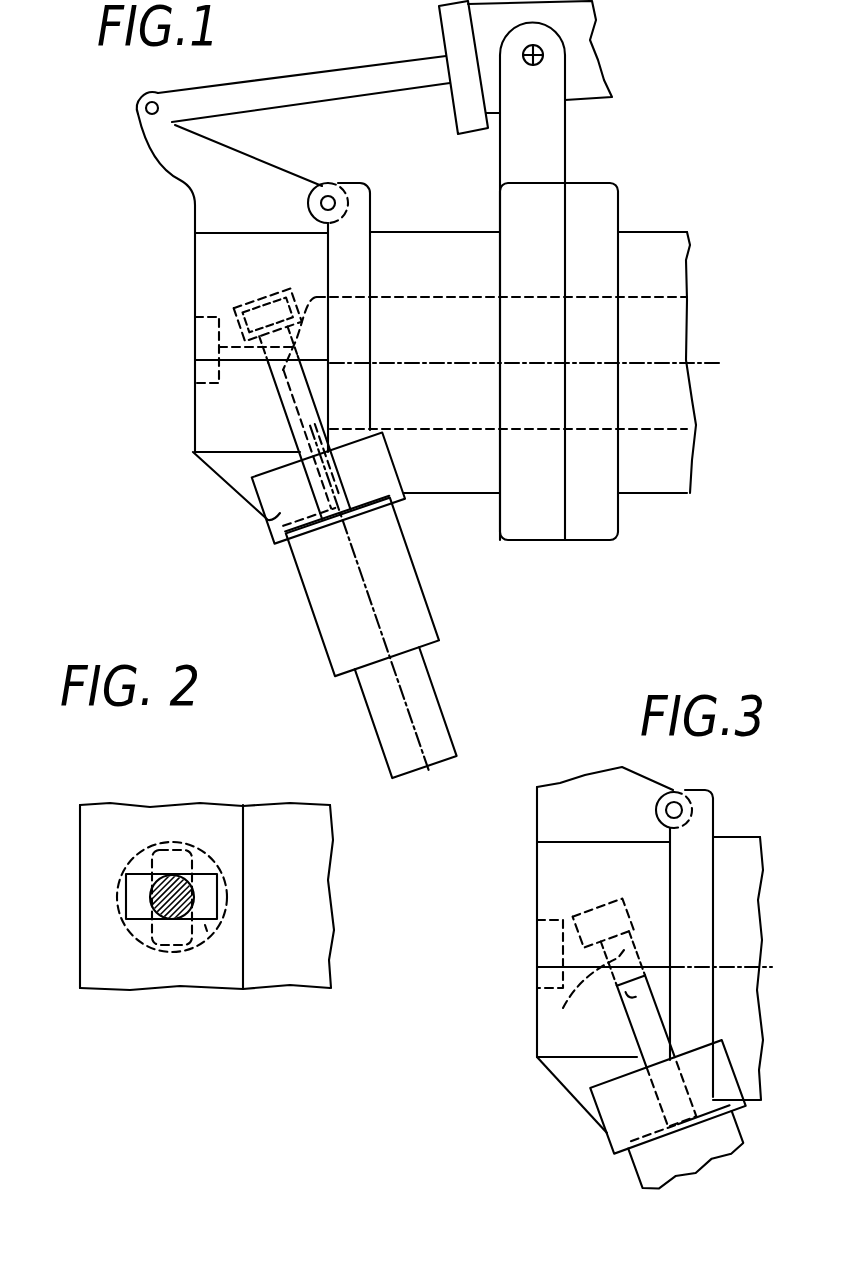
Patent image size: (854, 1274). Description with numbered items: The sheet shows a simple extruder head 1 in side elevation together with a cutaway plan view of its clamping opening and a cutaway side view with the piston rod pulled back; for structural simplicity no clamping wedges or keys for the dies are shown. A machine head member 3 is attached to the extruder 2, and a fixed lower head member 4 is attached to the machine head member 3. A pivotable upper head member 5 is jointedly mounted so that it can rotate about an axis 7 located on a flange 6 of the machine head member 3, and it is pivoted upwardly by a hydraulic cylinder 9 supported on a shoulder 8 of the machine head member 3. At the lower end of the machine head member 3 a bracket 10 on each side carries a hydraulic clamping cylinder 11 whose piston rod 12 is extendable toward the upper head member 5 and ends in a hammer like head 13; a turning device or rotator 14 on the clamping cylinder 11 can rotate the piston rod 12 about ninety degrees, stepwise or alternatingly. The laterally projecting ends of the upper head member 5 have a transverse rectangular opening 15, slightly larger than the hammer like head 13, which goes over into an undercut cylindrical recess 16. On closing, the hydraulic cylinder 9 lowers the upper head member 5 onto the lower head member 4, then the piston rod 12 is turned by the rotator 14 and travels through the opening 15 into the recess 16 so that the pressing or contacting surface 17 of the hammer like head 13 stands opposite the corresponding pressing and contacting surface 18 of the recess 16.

In FIG. 1, the extruder head 1 is at (150, 454).
In FIG. 1, the extruder 2 is at (658, 478).
In FIG. 3, the extruder 2 is at (721, 968).
In FIG. 1, the machine head member 3 is at (443, 252).
In FIG. 1, the fixed lower head member 4 is at (210, 413).
In FIG. 2, the fixed lower head member 4 is at (294, 978).
In FIG. 1, the pivotable upper head member 5 is at (210, 265).
In FIG. 2, the pivotable upper head member 5 is at (116, 815).
In FIG. 3, the pivotable upper head member 5 is at (548, 888).
In FIG. 1, the flange 6 is at (353, 230).
In FIG. 3, the flange 6 is at (691, 943).
In FIG. 1, the axis 7 is at (326, 200).
In FIG. 3, the axis 7 is at (690, 812).
In FIG. 1, the shoulder 8 is at (550, 163).
In FIG. 1, the hydraulic cylinder 9 is at (593, 88).
In FIG. 1, the bracket 10 is at (283, 517).
In FIG. 3, the bracket 10 is at (667, 1097).
In FIG. 1, the hydraulic clamping cylinder 11 is at (405, 583).
In FIG. 3, the hydraulic clamping cylinder 11 is at (650, 1162).
In FIG. 1, the piston rod 12 is at (292, 432).
In FIG. 2, the piston rod 12 is at (185, 898).
In FIG. 3, the piston rod 12 is at (655, 1050).
In FIG. 1, the hammer like head 13 is at (281, 298).
In FIG. 2, the hammer like head 13 is at (160, 925).
In FIG. 3, the hammer like head 13 is at (631, 994).
In FIG. 1, the turning device or rotator 14 is at (425, 717).
In FIG. 2, the rectangular opening 15 is at (207, 928).
In FIG. 3, the rectangular opening 15 is at (583, 1002).
In FIG. 1, the undercut cylindrical recess 16 is at (256, 300).
In FIG. 2, the undercut cylindrical recess 16 is at (183, 840).
In FIG. 3, the undercut cylindrical recess 16 is at (590, 910).
In FIG. 3, the pressing or contacting surface 17 is at (643, 1005).
In FIG. 3, the pressing and contacting surface 18 is at (615, 912).